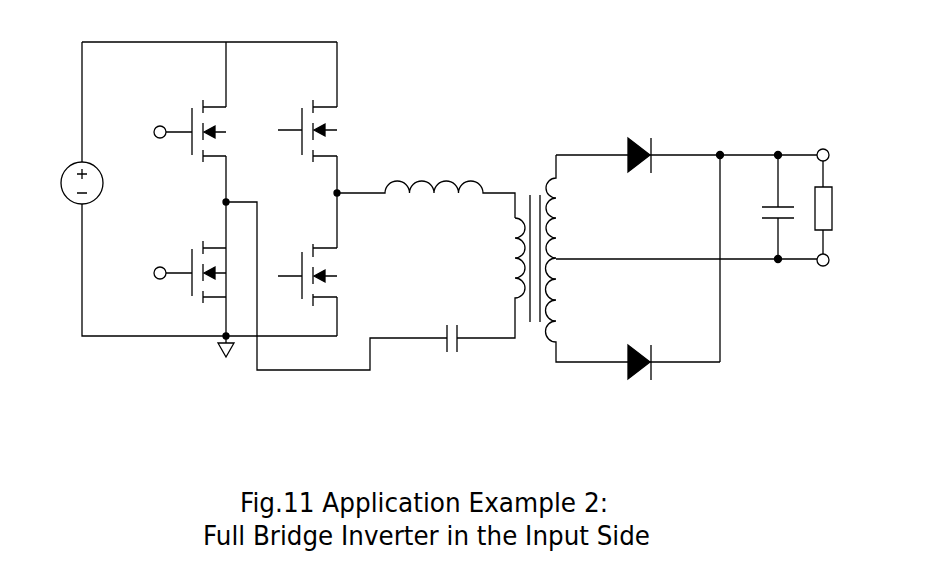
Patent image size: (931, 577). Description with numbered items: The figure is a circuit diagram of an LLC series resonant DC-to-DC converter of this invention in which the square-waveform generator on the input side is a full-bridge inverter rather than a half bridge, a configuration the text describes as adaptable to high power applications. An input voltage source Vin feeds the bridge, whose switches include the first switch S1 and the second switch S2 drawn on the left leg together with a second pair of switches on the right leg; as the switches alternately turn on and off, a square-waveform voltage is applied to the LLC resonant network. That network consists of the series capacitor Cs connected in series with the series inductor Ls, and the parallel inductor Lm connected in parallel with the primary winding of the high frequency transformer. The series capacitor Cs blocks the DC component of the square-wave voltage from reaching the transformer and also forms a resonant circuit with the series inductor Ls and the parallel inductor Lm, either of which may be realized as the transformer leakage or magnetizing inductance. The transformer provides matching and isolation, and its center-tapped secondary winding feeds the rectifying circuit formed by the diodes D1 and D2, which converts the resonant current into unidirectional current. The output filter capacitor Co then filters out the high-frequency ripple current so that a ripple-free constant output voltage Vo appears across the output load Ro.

The input voltage Vin is at (84, 102).
The first switch S1 is at (190, 112).
The second switch S2 is at (190, 254).
The series inductor Ls is at (426, 176).
The parallel inductor Lm is at (491, 278).
The series capacitor Cs is at (426, 324).
The diode D1 is at (722, 168).
The diode D2 is at (674, 384).
The output capacitor Co is at (777, 234).
The output load Ro is at (837, 238).
The output voltage Vo is at (806, 193).